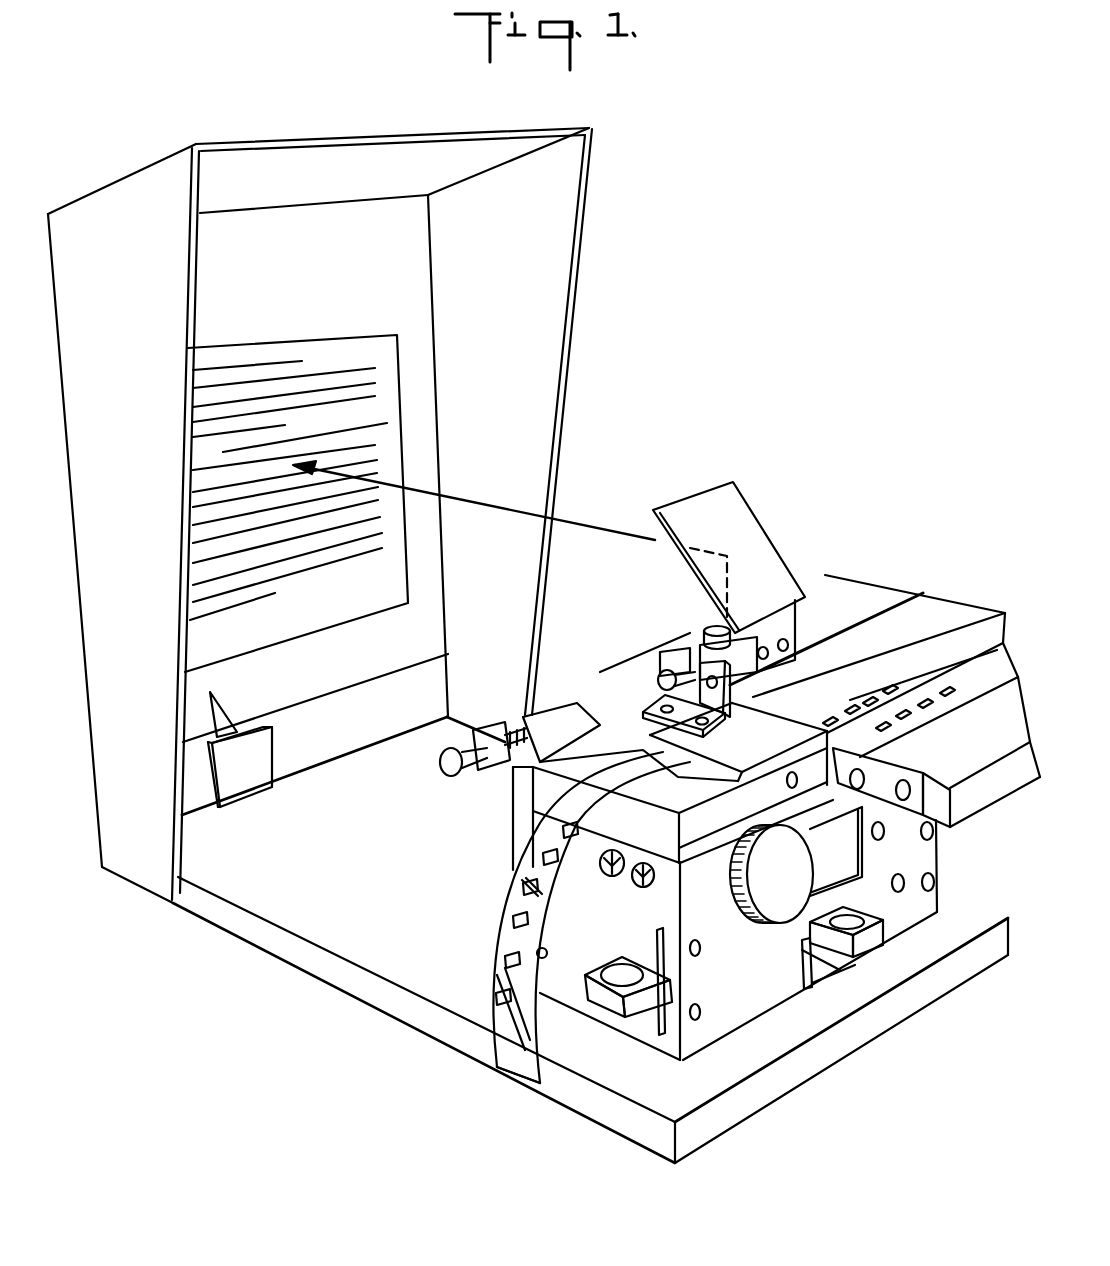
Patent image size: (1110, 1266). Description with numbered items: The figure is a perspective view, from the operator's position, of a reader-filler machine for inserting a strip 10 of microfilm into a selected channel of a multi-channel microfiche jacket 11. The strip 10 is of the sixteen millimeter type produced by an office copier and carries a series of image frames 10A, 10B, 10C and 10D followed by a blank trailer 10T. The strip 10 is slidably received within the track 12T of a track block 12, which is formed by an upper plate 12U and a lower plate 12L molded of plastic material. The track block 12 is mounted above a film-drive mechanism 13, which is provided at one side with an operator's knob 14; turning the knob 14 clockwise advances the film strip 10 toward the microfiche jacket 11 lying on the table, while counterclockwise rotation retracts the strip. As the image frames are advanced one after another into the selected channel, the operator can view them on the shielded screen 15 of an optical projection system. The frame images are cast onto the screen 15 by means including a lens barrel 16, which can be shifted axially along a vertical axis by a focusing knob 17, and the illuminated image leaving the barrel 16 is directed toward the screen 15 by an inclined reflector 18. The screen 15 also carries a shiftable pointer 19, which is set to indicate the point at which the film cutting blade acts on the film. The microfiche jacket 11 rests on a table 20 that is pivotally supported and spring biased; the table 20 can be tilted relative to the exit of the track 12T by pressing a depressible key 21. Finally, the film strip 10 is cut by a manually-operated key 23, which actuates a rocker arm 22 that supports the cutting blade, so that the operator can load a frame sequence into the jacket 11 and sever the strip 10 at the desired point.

The strip of microfilm 10 is at (540, 1018).
The image frame 10A is at (517, 990).
The image frame 10B is at (547, 950).
The image frame 10C is at (527, 923).
The fourth indicium 10D is at (540, 890).
The blank trailer 10T is at (510, 1057).
The multi-channel microfiche jacket 11 is at (948, 613).
The track block 12 is at (548, 770).
The lower plate 12L is at (770, 797).
The upper plate 12U is at (792, 746).
The track 12T is at (613, 752).
The film-drive mechanism 13 is at (733, 1020).
The operator's knob 14 is at (772, 912).
The shielded screen 15 is at (419, 351).
The lens barrel 16 is at (705, 624).
The focusing knob 17 is at (655, 675).
The inclined reflector 18 is at (742, 522).
The shiftable pointer 19 is at (250, 750).
The table 20 is at (967, 812).
The depressible key 21 is at (615, 1007).
The rocker arm 22 is at (553, 715).
The manually-operated key 23 is at (867, 940).